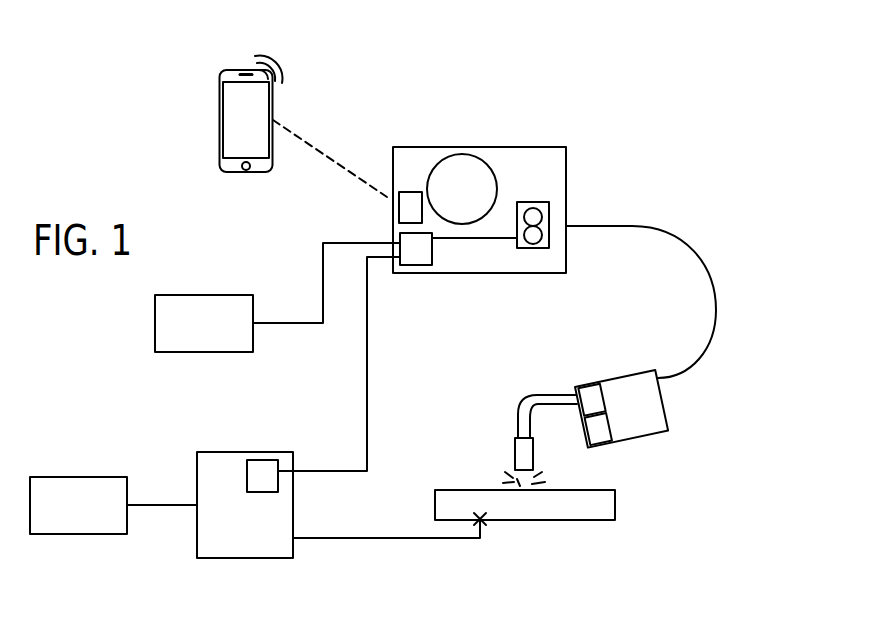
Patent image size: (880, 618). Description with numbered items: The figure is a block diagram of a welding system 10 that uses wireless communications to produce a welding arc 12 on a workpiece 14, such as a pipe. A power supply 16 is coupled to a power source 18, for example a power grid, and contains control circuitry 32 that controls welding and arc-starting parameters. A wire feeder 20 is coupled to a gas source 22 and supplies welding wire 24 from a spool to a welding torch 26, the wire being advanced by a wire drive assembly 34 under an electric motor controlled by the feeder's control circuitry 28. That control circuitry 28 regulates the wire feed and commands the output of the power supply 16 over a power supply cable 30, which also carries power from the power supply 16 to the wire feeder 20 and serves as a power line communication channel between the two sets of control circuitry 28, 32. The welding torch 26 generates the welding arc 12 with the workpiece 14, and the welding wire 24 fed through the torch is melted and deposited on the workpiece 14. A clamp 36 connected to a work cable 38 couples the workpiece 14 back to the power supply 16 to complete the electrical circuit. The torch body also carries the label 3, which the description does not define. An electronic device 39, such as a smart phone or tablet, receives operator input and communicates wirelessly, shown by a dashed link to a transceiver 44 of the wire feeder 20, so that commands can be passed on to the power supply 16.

The welding system 10 is at (661, 155).
The welding torch 3 is at (621, 388).
The welding arc 12 is at (513, 477).
The workpiece 14 is at (615, 505).
The power supply 16 is at (246, 452).
The power source 18 is at (76, 477).
The wire feeder 20 is at (482, 147).
The gas source 22 is at (202, 295).
The welding wire 24 is at (560, 220).
The welding torch 26 is at (613, 377).
The control circuitry 28 is at (432, 252).
The power supply cable 30 is at (367, 358).
The control circuitry 32 is at (262, 460).
The wire drive assembly 34 is at (542, 248).
The clamp 36 is at (477, 536).
The work cable 38 is at (387, 538).
The electronic device 39 is at (221, 86).
The transceiver 44 is at (410, 192).